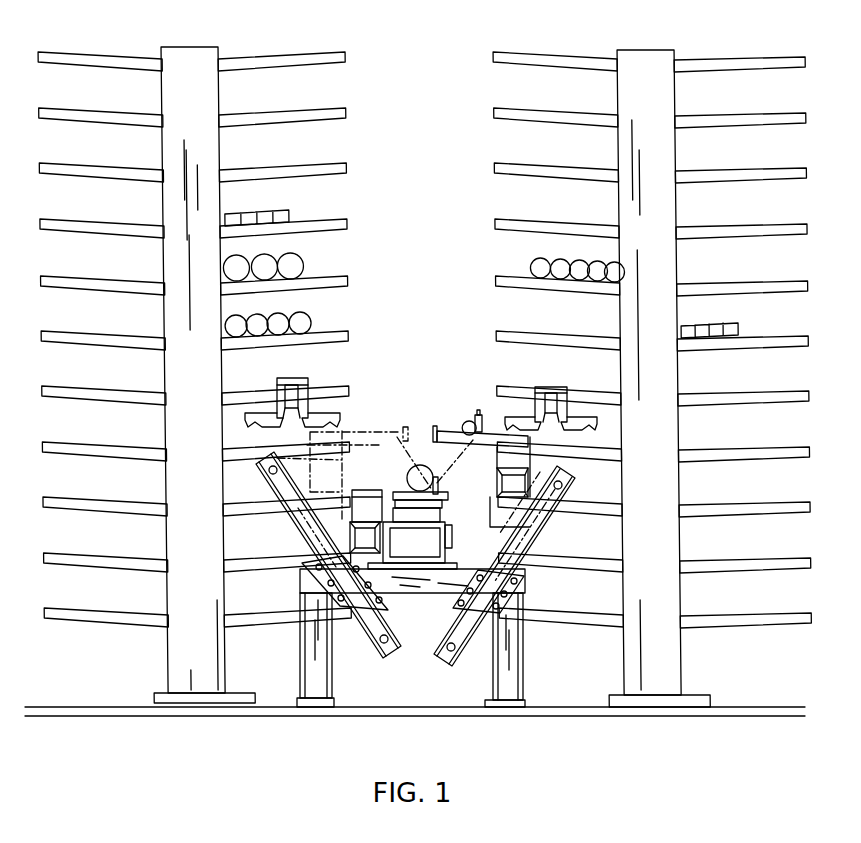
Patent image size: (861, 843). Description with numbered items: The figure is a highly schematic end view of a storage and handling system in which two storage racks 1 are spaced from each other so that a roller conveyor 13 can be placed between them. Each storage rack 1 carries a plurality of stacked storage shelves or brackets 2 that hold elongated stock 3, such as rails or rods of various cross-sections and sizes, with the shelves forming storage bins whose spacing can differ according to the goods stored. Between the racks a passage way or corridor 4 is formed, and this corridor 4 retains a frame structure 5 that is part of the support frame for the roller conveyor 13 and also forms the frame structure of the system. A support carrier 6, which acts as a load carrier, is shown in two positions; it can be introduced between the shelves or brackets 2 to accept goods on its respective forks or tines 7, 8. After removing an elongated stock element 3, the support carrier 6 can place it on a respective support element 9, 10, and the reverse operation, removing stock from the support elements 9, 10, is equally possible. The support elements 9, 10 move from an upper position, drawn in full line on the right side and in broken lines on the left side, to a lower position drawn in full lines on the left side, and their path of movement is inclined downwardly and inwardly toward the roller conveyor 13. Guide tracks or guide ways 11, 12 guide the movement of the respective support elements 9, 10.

The storage rack 1 is at (188, 75).
The storage shelf or bracket 2 is at (283, 60).
The elongated stock 3 is at (286, 215).
The passage way or corridor 4 is at (416, 82).
The frame structure 5 is at (315, 660).
The support carrier 6 is at (290, 395).
The fork or tine 7 is at (318, 420).
The fork or tine 8 is at (530, 428).
The support element 9 is at (375, 435).
The support element 10 is at (437, 428).
The guide track or guide way 11 is at (290, 515).
The guide track or guide way 12 is at (548, 523).
The roller conveyor 13 is at (417, 512).